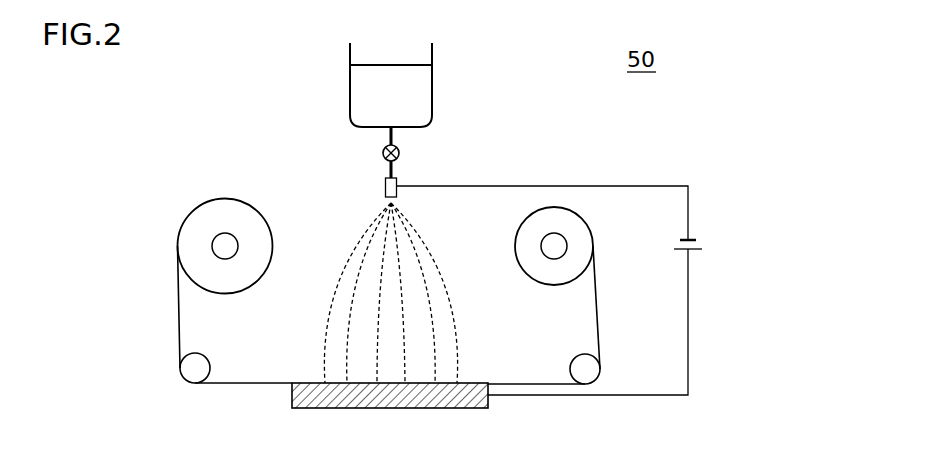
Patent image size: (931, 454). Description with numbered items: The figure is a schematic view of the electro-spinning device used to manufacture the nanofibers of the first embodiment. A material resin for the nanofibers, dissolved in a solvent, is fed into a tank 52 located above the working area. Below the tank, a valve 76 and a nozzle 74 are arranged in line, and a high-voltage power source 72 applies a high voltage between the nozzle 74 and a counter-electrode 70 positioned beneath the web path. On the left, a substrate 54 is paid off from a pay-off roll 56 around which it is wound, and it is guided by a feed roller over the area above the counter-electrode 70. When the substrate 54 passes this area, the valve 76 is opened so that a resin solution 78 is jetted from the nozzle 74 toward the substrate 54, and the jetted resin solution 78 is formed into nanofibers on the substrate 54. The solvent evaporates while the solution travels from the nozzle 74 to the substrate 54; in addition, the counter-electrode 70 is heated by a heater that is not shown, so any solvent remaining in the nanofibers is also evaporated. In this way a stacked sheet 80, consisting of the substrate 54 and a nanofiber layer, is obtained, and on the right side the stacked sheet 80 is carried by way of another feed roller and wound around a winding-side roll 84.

The tank 52 is at (432, 90).
The substrate 54 is at (178, 312).
The pay-off roll 56 is at (194, 202).
The counter-electrode 70 is at (292, 397).
The high-voltage power source 72 is at (708, 241).
The nozzle 74 is at (384, 187).
The valve 76 is at (381, 151).
The resin solution 78 is at (428, 248).
The stacked sheet 80 is at (598, 310).
The winding-side roll 84 is at (594, 217).